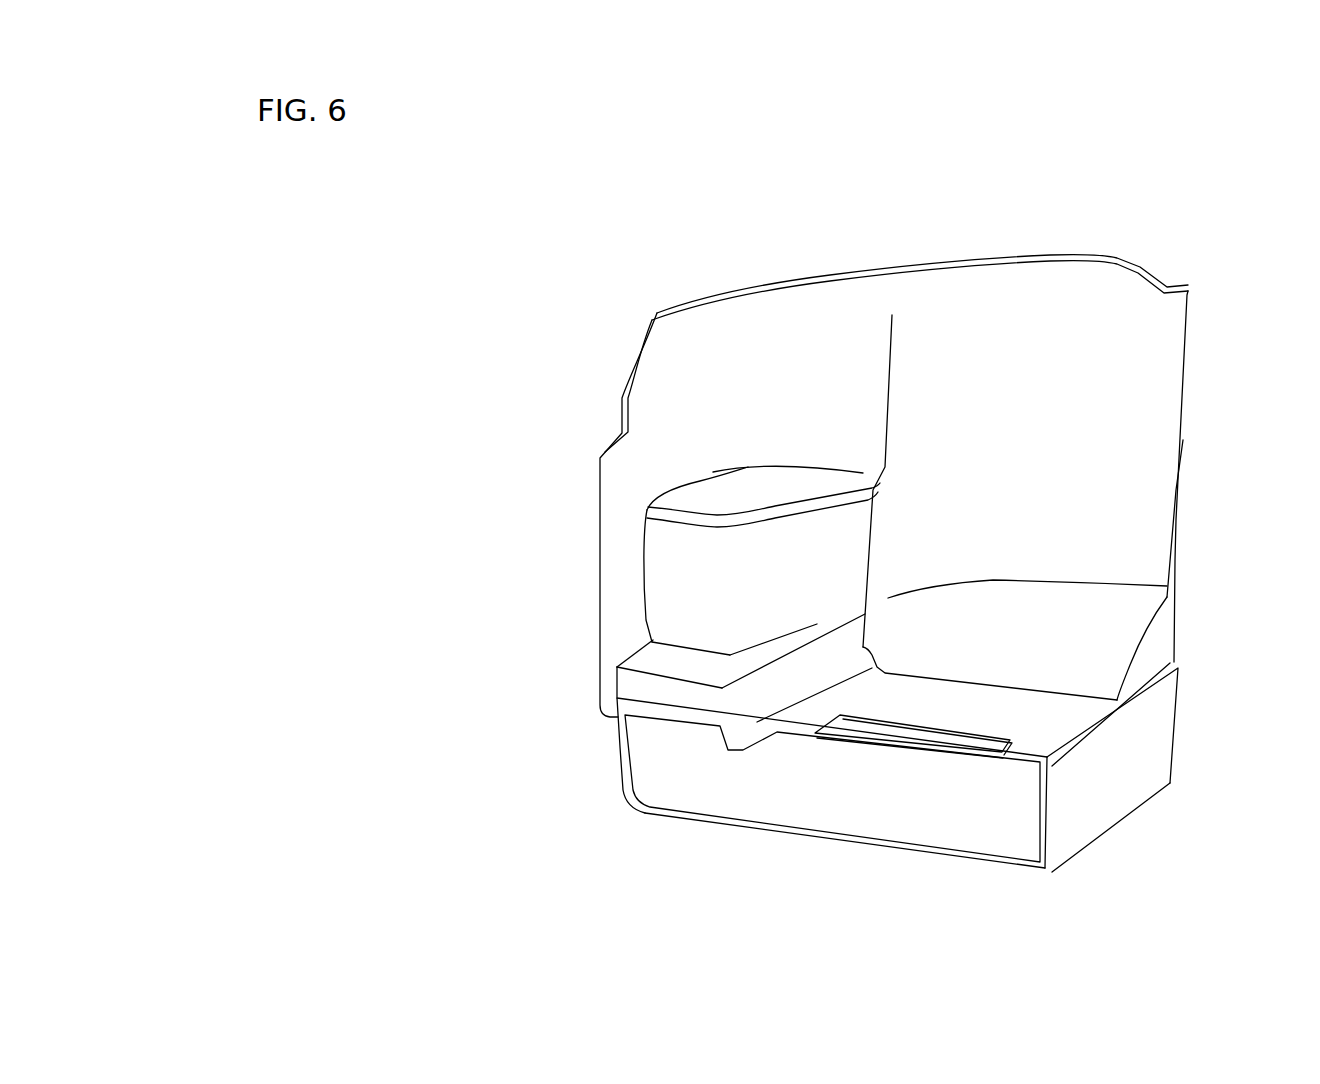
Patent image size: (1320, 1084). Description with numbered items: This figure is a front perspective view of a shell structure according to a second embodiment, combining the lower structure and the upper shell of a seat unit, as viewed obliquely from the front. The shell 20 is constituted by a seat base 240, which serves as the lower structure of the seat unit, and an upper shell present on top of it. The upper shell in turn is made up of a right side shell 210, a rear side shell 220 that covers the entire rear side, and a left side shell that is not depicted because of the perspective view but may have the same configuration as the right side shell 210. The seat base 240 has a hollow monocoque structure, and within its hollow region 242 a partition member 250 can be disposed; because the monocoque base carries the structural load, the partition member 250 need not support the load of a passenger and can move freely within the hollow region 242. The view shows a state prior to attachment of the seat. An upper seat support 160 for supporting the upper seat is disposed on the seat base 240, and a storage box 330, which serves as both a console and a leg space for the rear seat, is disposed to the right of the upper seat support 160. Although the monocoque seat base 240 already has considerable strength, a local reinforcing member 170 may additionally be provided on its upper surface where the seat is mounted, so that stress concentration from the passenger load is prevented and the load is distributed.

The shell 20 is at (1157, 227).
The rear side shell 220 is at (972, 257).
The right side shell 210 is at (618, 413).
The storage box 330 is at (722, 497).
The upper seat support 160 is at (962, 707).
The local reinforcing member 170 is at (930, 742).
The seat base 240 is at (1103, 770).
The hollow region 242 is at (713, 767).
The partition member 250 is at (892, 843).